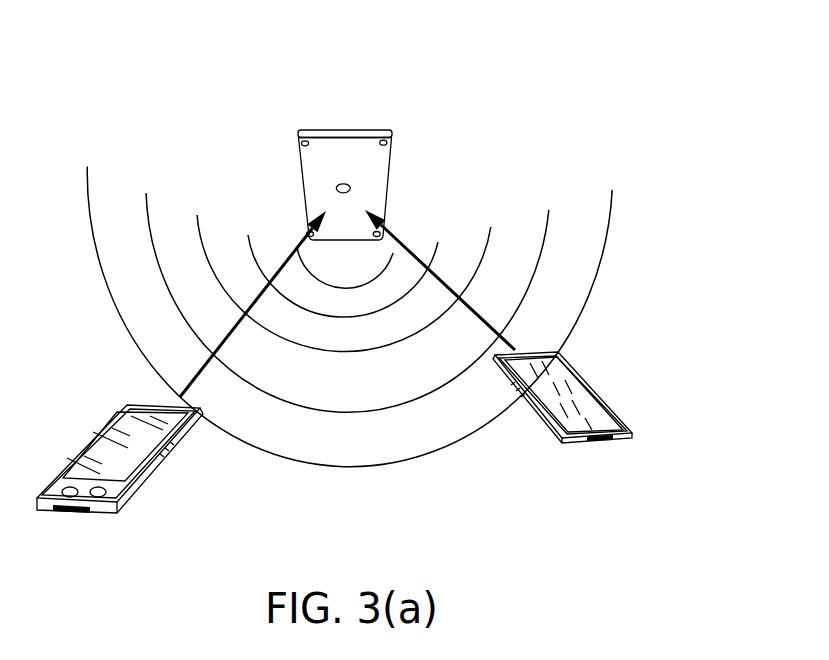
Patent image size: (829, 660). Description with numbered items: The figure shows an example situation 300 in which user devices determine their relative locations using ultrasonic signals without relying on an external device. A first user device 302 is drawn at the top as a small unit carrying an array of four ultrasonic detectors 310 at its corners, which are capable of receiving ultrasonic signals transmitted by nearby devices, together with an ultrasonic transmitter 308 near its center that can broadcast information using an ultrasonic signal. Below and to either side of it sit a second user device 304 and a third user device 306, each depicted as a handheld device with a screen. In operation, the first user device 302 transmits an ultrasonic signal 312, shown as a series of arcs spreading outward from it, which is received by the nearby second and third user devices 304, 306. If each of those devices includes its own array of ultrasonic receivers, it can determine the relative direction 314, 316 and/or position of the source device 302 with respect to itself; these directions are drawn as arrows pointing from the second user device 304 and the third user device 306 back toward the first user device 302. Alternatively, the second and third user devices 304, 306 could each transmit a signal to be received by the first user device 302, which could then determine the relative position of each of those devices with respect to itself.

The situation 300 is at (703, 117).
The first user device 302 is at (338, 130).
The second user device 304 is at (142, 485).
The third user device 306 is at (622, 442).
The ultrasonic transmitter 308 is at (350, 190).
The ultrasonic detectors 310 is at (393, 143).
The ultrasonic signal 312 is at (602, 258).
The relative direction 314 is at (203, 368).
The relative direction 316 is at (480, 312).